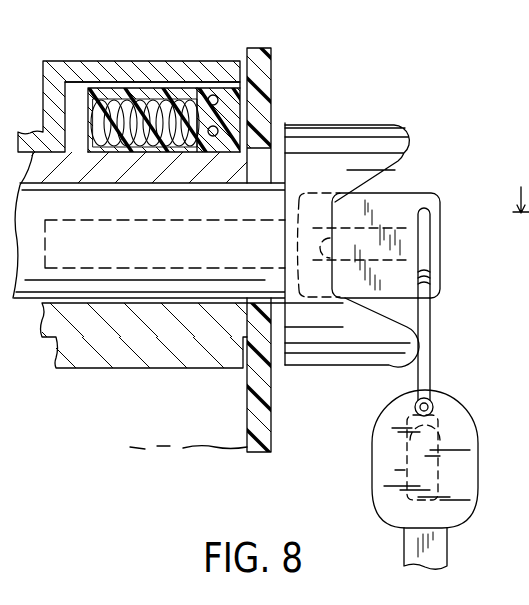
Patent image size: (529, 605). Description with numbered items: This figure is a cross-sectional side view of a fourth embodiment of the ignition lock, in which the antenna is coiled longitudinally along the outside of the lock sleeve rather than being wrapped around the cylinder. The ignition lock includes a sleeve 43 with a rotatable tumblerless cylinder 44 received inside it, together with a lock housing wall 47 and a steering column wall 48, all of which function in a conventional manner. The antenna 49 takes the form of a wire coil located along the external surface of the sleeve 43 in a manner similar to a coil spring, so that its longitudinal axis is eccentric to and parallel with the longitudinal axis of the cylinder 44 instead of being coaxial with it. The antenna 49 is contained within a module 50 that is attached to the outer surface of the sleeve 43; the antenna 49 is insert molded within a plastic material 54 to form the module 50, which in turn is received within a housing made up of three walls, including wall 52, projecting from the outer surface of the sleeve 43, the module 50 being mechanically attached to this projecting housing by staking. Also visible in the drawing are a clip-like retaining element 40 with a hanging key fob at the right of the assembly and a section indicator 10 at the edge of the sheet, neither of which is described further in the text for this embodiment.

The retainer clip 40 is at (441, 198).
The sleeve 43 is at (151, 325).
The rotatable tumblerless cylinder 44 is at (38, 283).
The lock housing wall 47 is at (61, 68).
The steering column wall 48 is at (263, 421).
The antenna 49 is at (150, 100).
The module 50 is at (192, 82).
The wall 52 is at (80, 97).
The plastic material 54 is at (230, 120).
The section indicator 10 is at (521, 221).